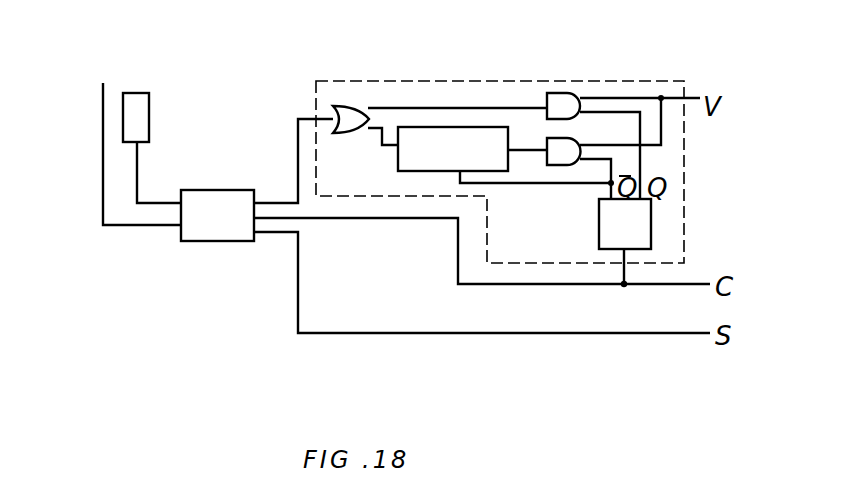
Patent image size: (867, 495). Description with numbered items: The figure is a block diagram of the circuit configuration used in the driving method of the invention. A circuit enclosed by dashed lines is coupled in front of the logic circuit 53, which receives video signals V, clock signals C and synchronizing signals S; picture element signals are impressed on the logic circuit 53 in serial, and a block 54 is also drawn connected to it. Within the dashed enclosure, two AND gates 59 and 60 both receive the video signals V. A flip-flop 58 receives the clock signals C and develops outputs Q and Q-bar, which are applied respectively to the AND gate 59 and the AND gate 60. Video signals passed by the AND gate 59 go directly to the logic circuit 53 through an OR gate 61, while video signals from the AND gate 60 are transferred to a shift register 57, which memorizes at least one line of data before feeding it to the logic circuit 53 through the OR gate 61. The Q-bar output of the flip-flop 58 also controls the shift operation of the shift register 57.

The logic circuit 53 is at (205, 200).
The sensor 54 is at (145, 127).
The shift register 57 is at (436, 133).
The flip-flop 58 is at (637, 228).
The AND gate 59 is at (568, 97).
The AND gate 60 is at (573, 143).
The OR gate 61 is at (350, 108).